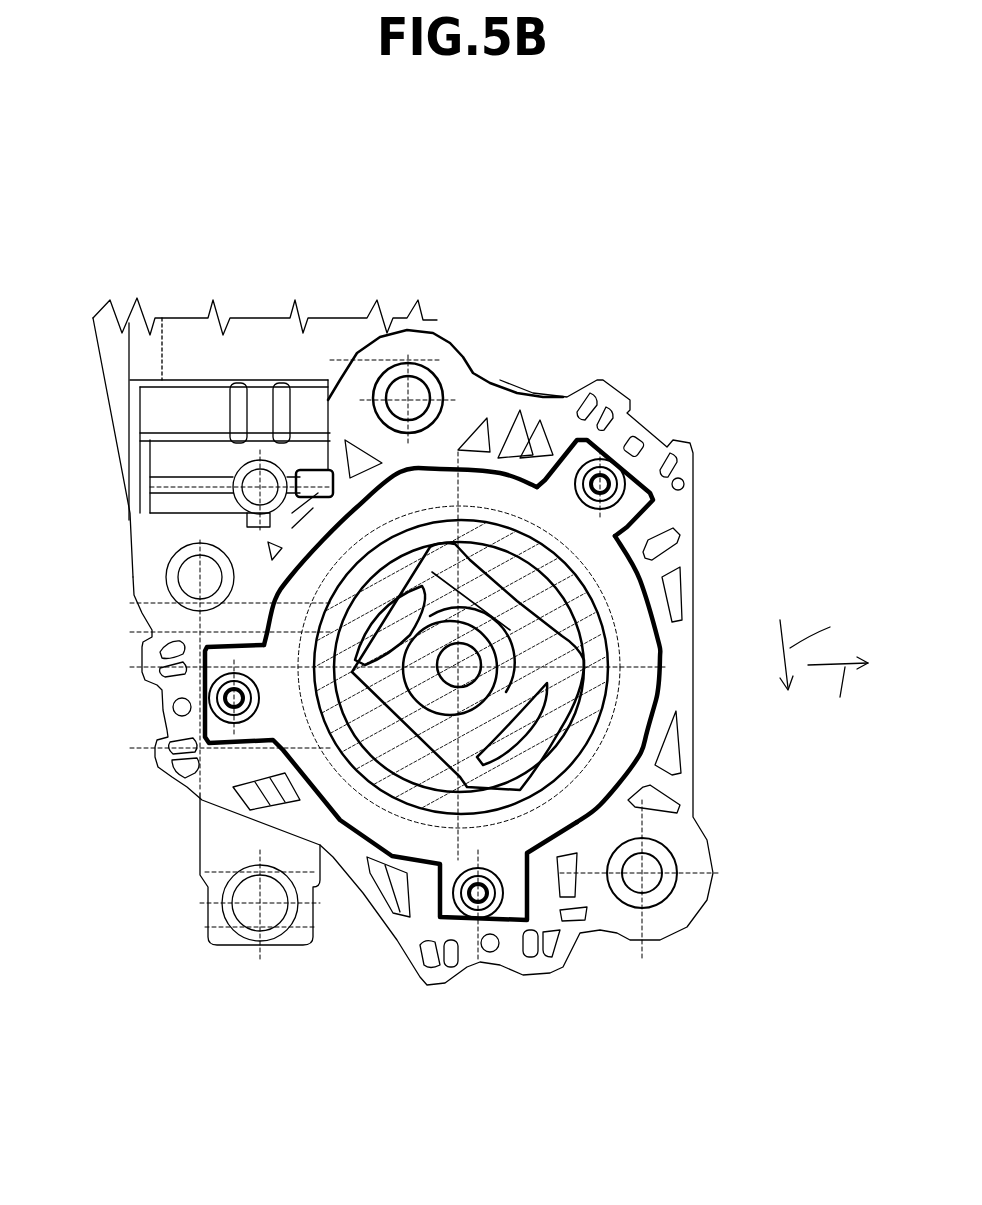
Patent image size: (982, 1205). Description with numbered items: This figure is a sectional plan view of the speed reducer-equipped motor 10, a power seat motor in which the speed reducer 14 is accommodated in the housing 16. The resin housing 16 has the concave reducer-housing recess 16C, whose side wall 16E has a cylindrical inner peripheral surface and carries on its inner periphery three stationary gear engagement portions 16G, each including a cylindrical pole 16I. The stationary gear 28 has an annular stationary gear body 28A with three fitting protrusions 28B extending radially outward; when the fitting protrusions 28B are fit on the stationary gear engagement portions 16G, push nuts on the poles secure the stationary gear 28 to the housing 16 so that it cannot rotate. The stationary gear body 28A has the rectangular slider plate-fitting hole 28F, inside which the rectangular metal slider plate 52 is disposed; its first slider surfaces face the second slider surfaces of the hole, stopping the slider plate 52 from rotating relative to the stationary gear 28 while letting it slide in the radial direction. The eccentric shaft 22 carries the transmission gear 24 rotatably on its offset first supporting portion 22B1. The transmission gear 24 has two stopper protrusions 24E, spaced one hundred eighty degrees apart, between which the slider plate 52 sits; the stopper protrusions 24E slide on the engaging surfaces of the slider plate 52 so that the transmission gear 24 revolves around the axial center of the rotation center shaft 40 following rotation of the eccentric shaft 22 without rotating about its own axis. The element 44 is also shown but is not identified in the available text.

The speed reducer-equipped motor 10 is at (528, 176).
The speed reducer 14 is at (245, 787).
The housing 16 is at (483, 367).
The reducer-housing recess 16C is at (660, 645).
The side wall 16E is at (665, 722).
The stationary gear engagement portions 16G is at (563, 430).
The cylindrical pole 16I is at (640, 450).
The eccentric shaft 22 is at (460, 770).
The first supporting portion 22B1 is at (445, 735).
The transmission gear 24 is at (578, 875).
The stopper protrusions 24E is at (515, 738).
The stationary gear 28 is at (175, 748).
The stationary gear body 28A is at (200, 648).
The fitting protrusions 28B is at (640, 500).
The slider plate-fitting hole 28F is at (694, 807).
The rotation center shaft 40 is at (165, 615).
The bolt 44 is at (615, 515).
The slider plate 52 is at (352, 735).